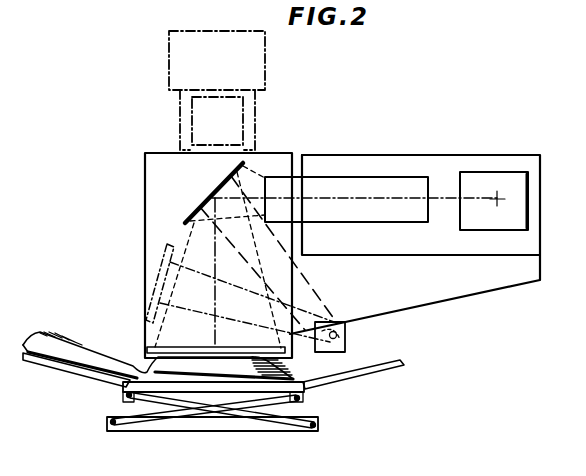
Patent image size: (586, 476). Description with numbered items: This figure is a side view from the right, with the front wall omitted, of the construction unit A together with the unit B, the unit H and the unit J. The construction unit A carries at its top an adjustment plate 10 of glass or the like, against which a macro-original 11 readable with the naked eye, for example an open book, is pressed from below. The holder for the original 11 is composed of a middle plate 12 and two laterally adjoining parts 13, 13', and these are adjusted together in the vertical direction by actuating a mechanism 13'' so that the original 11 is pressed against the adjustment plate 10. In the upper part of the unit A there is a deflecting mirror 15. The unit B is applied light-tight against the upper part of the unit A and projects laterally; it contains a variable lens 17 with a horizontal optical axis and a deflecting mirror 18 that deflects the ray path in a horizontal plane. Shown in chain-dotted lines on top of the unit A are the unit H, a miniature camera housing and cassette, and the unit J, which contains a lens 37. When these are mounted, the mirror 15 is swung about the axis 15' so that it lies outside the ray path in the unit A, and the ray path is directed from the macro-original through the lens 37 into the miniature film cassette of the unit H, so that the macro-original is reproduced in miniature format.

The construction unit A is at (144, 224).
The unit B is at (432, 153).
The unit H is at (168, 48).
The unit J is at (179, 125).
The lens 37 is at (245, 110).
The deflecting mirror 15 is at (204, 193).
The axis 15' is at (355, 337).
The variable lens 17 is at (355, 183).
The deflecting mirror 18 is at (511, 183).
The adjustment plate 10 is at (192, 353).
The original 11 is at (237, 367).
The middle plate 12 is at (279, 392).
The laterally adjoining part 13 is at (76, 380).
The laterally adjoining part 13' is at (353, 388).
The mechanism 13'' is at (213, 429).